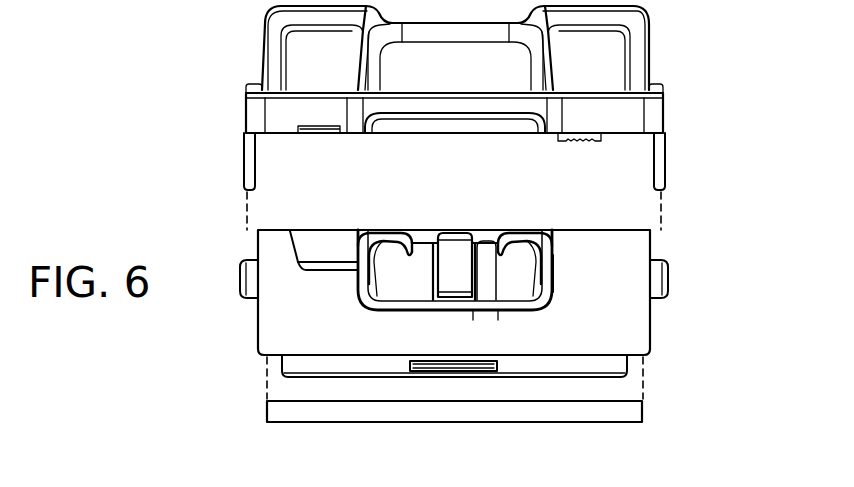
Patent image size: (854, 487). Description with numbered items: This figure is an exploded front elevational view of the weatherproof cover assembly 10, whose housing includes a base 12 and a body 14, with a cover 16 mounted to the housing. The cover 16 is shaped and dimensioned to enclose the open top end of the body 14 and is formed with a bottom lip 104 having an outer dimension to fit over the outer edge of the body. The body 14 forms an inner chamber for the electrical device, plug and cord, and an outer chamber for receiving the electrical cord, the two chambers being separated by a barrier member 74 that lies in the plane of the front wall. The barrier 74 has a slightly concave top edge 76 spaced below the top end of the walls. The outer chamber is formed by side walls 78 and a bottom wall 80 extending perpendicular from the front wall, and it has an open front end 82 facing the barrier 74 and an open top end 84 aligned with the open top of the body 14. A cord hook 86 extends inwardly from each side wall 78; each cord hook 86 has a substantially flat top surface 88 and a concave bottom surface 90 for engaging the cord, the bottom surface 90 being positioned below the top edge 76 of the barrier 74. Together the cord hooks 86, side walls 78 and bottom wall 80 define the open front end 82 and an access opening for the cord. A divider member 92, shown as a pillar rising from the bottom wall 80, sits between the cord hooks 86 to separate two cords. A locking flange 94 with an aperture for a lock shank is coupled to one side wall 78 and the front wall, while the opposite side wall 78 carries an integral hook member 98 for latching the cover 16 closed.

The weatherproof cover assembly 10 is at (190, 196).
The base 12 is at (255, 414).
The body 14 is at (248, 339).
The cover 16 is at (250, 62).
The barrier member 74 is at (487, 256).
The top edge 76 is at (432, 230).
The side walls 78 is at (359, 288).
The bottom wall 80 is at (453, 311).
The open front end 82 is at (522, 283).
The open top end 84 is at (414, 262).
The cord hook 86 is at (390, 222).
The top surface 88 is at (376, 230).
The bottom surface 90 is at (377, 310).
The divider member 92 is at (460, 230).
The locking flange 94 is at (317, 275).
The hook member 98 is at (553, 260).
The bottom lip 104 is at (512, 62).